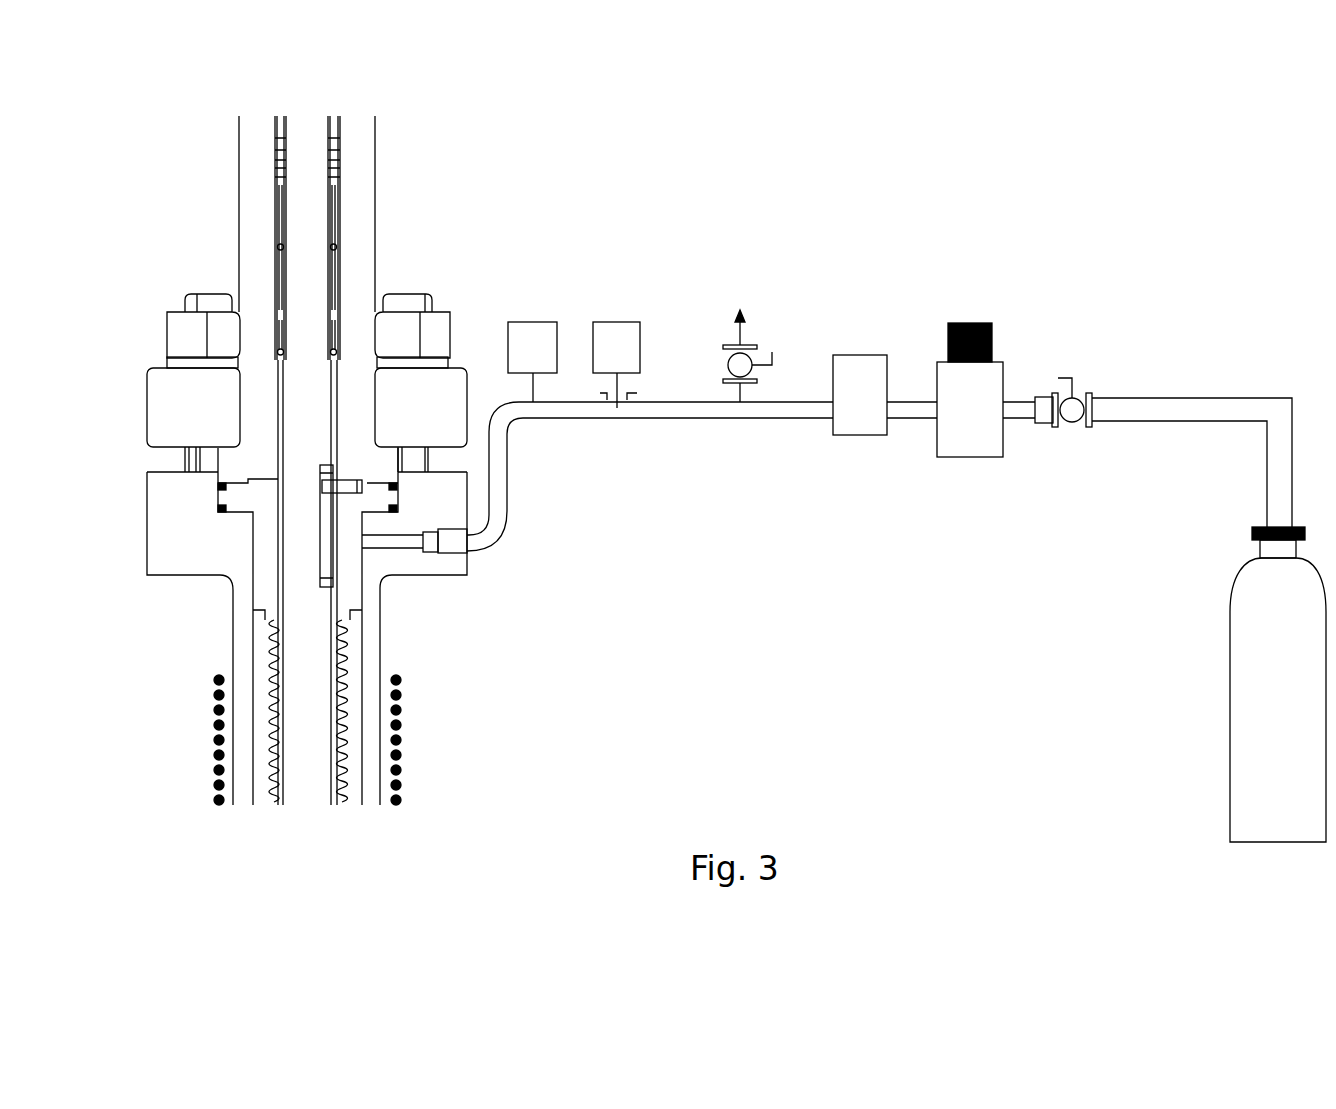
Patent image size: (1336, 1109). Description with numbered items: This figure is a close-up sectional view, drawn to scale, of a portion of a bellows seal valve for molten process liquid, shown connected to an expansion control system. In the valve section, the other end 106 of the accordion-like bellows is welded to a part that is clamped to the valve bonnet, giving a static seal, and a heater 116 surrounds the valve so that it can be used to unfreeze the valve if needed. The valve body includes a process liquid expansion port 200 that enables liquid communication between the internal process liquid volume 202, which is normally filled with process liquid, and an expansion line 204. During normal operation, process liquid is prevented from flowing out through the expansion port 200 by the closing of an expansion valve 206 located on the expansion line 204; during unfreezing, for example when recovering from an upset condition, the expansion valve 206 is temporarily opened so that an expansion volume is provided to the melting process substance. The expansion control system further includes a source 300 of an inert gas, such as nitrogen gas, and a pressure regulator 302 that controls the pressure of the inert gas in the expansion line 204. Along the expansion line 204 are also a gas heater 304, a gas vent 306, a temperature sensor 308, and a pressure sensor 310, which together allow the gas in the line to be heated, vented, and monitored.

The other end of the bellows 106 is at (265, 622).
The heater 116 is at (400, 740).
The process liquid expansion port 200 is at (455, 553).
The internal process liquid volume 202 is at (355, 636).
The expansion line 204 is at (507, 487).
The expansion valve 206 is at (1070, 426).
The source of an inert gas 300 is at (1228, 627).
The pressure regulator 302 is at (955, 421).
The gas heater 304 is at (852, 355).
The gas vent 306 is at (728, 372).
The temperature sensor 308 is at (612, 322).
The pressure sensor 310 is at (533, 322).